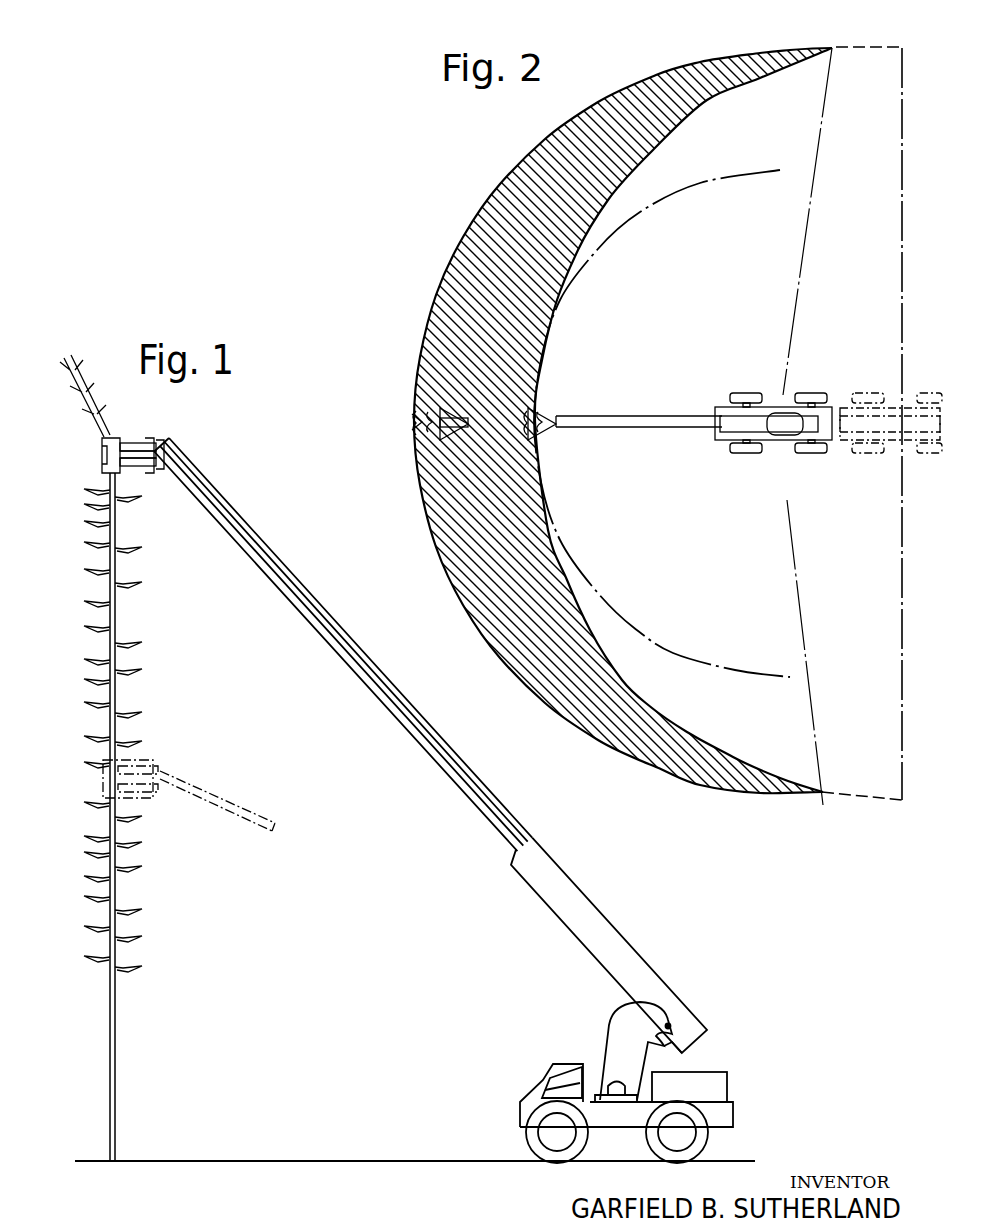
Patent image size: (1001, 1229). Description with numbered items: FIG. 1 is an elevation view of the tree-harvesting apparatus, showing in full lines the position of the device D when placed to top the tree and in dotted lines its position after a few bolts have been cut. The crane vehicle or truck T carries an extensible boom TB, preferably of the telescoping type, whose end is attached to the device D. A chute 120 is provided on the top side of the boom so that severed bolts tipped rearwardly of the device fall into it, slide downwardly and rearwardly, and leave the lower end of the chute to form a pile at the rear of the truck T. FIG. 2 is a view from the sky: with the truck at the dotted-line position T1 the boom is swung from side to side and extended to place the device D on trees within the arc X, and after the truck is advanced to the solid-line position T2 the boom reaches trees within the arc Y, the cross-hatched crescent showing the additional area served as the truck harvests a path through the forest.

In FIG. 2, the arc Y is at (624, 88).
In FIG. 2, the arc X is at (692, 127).
In FIG. 2, the truck position T2 is at (773, 455).
In FIG. 2, the truck position T1 is at (888, 464).
In FIG. 1, the device D is at (89, 451).
In FIG. 1, the chute 120 is at (205, 479).
In FIG. 1, the boom TB is at (433, 758).
In FIG. 1, the truck T is at (518, 1096).